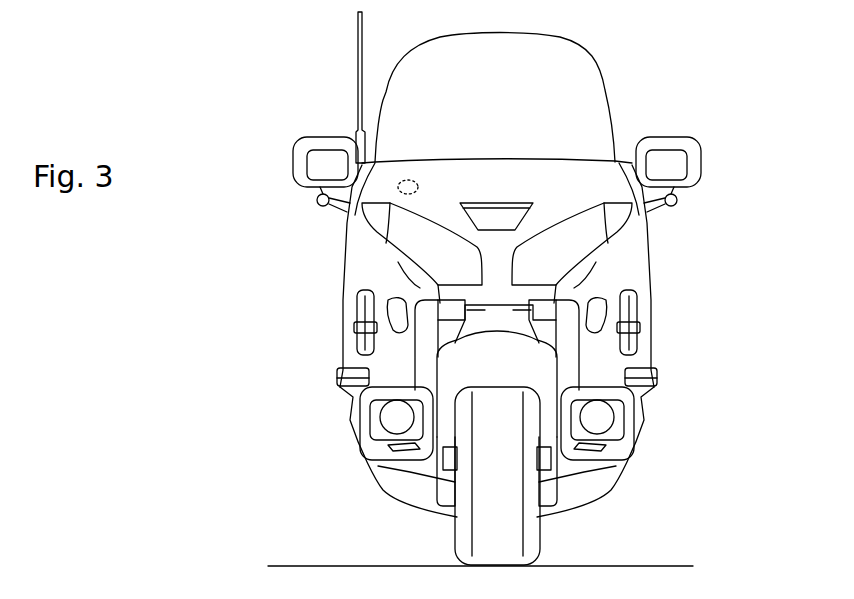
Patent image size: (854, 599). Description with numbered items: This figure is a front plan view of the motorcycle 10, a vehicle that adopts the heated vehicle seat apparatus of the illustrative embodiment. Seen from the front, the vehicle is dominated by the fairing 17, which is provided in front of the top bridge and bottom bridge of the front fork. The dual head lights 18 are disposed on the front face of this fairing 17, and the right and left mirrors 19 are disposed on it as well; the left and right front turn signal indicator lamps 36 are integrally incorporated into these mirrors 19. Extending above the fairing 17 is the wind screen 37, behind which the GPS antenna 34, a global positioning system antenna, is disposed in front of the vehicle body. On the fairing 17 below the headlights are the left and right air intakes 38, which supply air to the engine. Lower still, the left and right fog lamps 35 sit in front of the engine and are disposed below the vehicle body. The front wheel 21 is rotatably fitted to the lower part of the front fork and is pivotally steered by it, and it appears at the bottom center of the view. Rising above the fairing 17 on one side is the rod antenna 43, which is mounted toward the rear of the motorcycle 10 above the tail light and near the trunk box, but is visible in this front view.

The motorcycle 10 is at (186, 88).
The fairing 17 is at (583, 188).
The head lights 18 is at (433, 227).
The mirrors 19 is at (315, 160).
The front wheel 21 is at (507, 542).
The GPS antenna 34 is at (405, 180).
The fog light 35 is at (335, 380).
The front turn signal indicator lamp 36 is at (293, 147).
The wind screen 37 is at (603, 87).
The air intake 38 is at (390, 297).
The rod antenna 43 is at (360, 80).